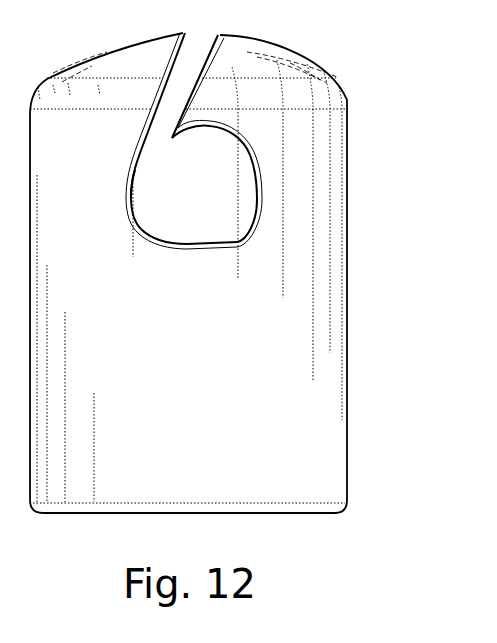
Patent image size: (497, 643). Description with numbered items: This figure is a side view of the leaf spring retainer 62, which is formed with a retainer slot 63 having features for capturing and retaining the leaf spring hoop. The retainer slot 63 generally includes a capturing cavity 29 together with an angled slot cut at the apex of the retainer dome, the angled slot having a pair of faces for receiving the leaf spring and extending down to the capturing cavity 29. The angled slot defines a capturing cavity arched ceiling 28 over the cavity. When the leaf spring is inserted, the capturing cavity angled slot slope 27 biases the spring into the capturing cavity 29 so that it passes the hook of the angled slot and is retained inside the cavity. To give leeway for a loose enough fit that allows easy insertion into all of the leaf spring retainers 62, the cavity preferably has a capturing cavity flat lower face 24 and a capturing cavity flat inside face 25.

The capturing cavity flat lower face 24 is at (210, 247).
The capturing cavity flat inside face 25 is at (253, 213).
The capturing cavity angled slot slope 27 is at (134, 212).
The capturing cavity arched ceiling 28 is at (211, 129).
The capturing cavity 29 is at (160, 186).
The leaf spring retainer 62 is at (208, 443).
The retainer slot 63 is at (257, 172).